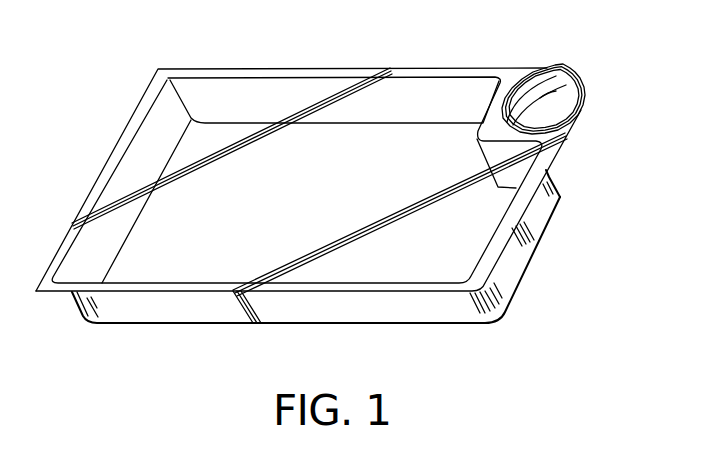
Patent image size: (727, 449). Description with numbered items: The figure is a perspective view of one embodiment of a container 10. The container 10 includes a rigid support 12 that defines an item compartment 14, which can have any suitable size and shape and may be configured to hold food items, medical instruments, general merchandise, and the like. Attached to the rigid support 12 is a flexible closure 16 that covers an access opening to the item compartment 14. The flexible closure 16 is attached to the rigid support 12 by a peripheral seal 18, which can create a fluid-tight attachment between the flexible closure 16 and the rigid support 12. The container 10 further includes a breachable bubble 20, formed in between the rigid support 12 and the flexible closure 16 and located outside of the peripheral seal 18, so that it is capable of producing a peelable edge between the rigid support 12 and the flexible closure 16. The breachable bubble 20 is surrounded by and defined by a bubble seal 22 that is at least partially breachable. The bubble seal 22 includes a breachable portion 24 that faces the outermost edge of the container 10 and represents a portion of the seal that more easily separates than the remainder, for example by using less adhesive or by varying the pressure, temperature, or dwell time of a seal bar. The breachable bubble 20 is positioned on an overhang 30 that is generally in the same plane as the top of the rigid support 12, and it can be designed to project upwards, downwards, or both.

The container 10 is at (93, 76).
The rigid support 12 is at (498, 265).
The item compartment 14 is at (276, 147).
The flexible closure 16 is at (520, 167).
The peripheral seal 18 is at (166, 287).
The breachable bubble 20 is at (543, 84).
The bubble seal 22 is at (567, 133).
The breachable portion 24 is at (580, 82).
The overhang 30 is at (520, 78).